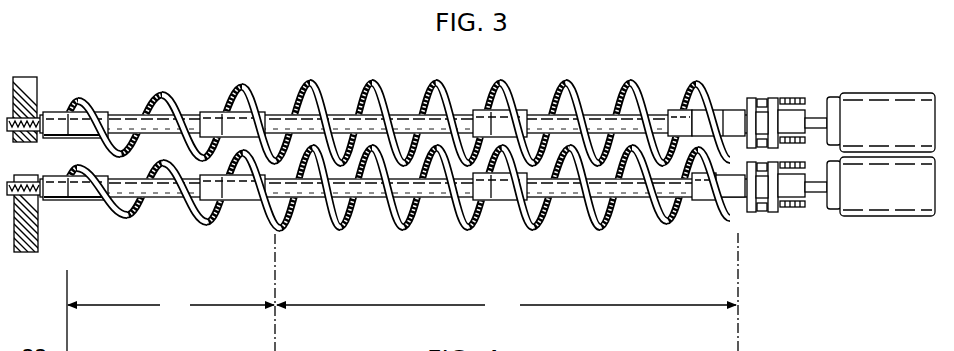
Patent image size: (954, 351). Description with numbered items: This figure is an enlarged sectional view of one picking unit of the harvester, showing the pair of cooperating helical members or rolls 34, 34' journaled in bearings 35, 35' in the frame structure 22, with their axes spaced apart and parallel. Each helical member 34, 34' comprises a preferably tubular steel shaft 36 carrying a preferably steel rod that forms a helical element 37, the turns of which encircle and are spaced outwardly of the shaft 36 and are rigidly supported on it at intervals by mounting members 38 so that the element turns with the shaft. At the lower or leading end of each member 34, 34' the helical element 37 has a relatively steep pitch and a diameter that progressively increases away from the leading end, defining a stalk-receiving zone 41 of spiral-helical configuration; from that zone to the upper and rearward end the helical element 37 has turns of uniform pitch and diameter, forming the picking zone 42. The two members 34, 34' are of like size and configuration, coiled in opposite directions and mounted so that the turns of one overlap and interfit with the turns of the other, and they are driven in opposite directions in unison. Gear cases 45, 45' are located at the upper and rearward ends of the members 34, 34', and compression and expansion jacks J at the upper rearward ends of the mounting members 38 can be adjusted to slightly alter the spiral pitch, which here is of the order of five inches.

The frame structure 22 is at (27, 77).
The helical member 34 is at (171, 210).
The helical member 34' is at (168, 101).
The bearing 35 is at (75, 218).
The bearing 35' is at (75, 97).
The tubular steel shaft 36 is at (344, 119).
The helical element 37 is at (438, 92).
The mounting member 38 is at (262, 106).
The stalk-receiving zone 41 is at (171, 292).
The picking zone 42 is at (507, 292).
The gear case 45 is at (881, 122).
The gear case 45' is at (881, 186).
The compression and expansion jack J is at (766, 224).